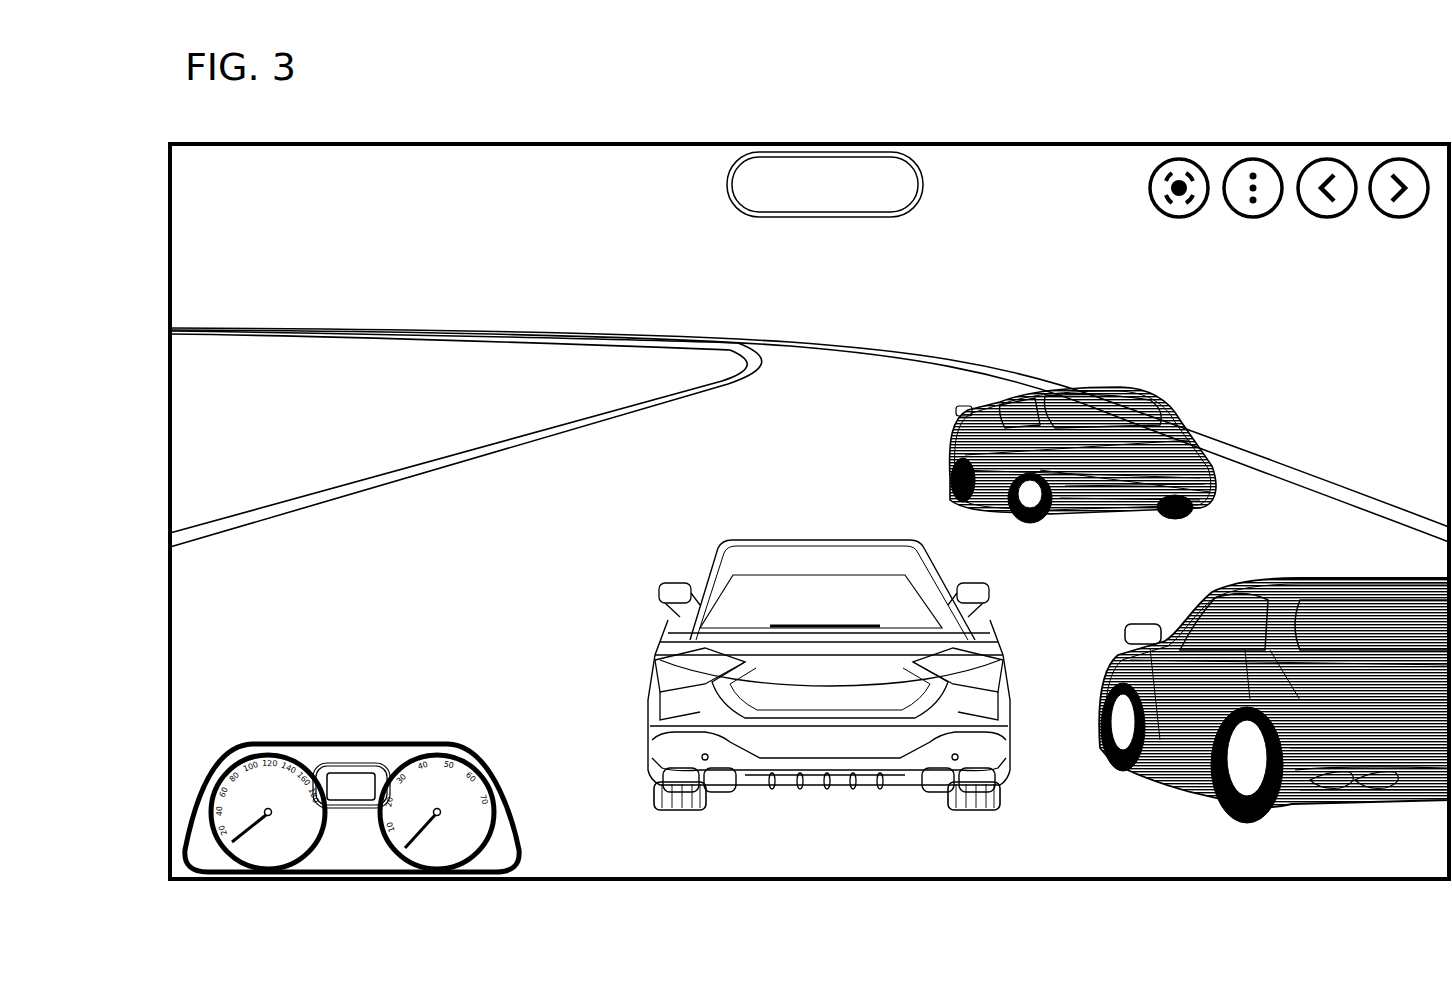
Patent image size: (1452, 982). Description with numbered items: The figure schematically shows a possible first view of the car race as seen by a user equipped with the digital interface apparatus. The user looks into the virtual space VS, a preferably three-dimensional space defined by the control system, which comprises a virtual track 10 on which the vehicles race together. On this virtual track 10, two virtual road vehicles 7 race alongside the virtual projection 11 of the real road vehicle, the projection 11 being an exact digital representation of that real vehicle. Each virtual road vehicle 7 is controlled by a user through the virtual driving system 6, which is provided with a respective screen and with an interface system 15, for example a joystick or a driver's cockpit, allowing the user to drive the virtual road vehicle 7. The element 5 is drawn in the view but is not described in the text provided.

The interface system 15 is at (508, 128).
The display screen 5 is at (1017, 133).
The virtual space VS is at (225, 242).
The virtual driving system 6 is at (1262, 130).
The virtual track 10 is at (447, 525).
The virtual projection 11 is at (817, 545).
The road vehicle 7 is at (1118, 385).